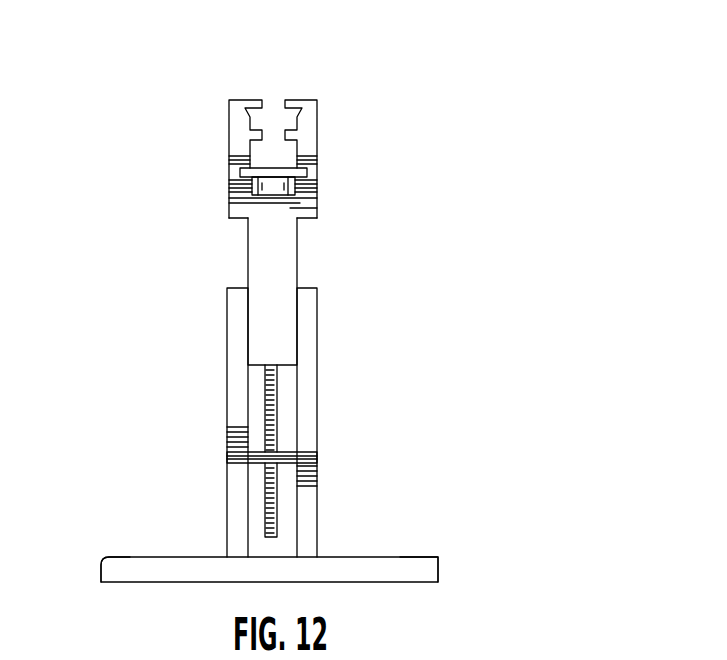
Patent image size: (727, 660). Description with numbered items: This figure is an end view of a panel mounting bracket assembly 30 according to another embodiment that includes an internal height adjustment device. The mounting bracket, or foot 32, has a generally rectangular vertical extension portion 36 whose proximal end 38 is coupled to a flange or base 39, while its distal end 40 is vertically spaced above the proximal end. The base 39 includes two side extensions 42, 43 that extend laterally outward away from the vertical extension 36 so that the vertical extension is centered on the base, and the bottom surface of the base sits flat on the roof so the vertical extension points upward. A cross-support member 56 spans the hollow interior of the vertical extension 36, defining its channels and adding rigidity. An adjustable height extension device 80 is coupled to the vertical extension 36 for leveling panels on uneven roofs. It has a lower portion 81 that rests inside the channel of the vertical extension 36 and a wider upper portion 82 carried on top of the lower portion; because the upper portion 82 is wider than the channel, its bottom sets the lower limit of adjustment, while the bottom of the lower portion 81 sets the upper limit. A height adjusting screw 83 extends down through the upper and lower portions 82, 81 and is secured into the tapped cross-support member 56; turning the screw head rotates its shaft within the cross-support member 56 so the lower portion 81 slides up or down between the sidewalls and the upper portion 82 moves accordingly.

The assembly 30 is at (540, 145).
The adjustable height extension device 80 is at (343, 78).
The upper portion 82 is at (318, 131).
The lower portion 81 is at (297, 272).
The height adjusting screw 83 is at (277, 402).
The mounting bracket 32 is at (358, 471).
The distal end 40 is at (214, 310).
The vertical extension portion 36 is at (214, 423).
The proximal end 38 is at (213, 531).
The cross-support member 56 is at (292, 448).
The base 39 is at (458, 569).
The side extension 42 is at (101, 557).
The side extension 43 is at (424, 557).